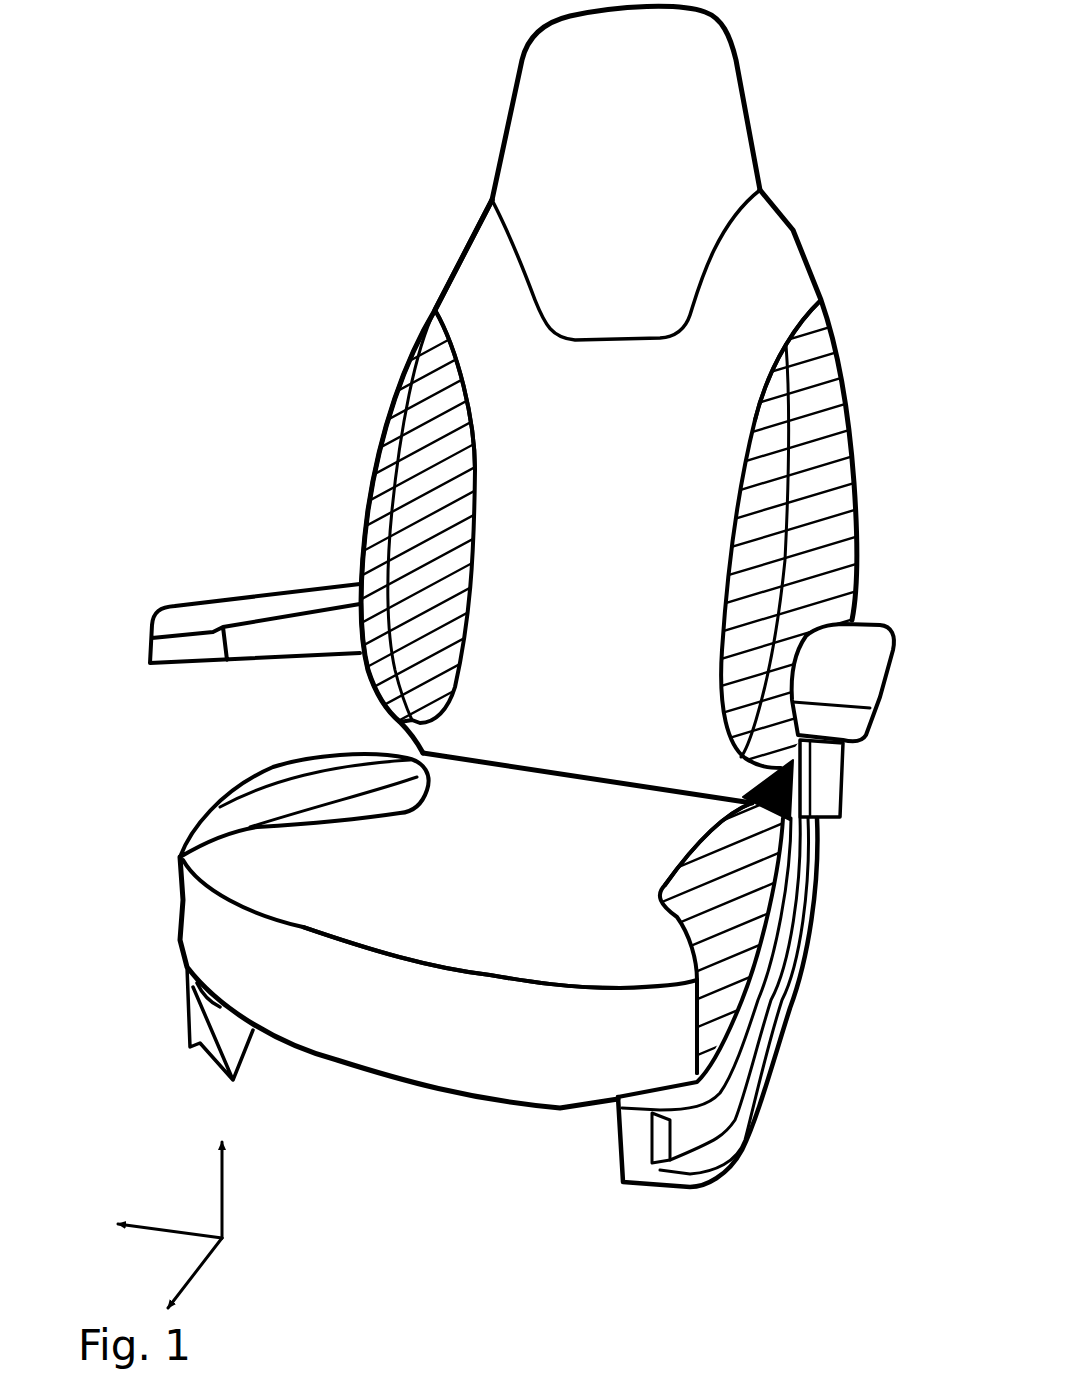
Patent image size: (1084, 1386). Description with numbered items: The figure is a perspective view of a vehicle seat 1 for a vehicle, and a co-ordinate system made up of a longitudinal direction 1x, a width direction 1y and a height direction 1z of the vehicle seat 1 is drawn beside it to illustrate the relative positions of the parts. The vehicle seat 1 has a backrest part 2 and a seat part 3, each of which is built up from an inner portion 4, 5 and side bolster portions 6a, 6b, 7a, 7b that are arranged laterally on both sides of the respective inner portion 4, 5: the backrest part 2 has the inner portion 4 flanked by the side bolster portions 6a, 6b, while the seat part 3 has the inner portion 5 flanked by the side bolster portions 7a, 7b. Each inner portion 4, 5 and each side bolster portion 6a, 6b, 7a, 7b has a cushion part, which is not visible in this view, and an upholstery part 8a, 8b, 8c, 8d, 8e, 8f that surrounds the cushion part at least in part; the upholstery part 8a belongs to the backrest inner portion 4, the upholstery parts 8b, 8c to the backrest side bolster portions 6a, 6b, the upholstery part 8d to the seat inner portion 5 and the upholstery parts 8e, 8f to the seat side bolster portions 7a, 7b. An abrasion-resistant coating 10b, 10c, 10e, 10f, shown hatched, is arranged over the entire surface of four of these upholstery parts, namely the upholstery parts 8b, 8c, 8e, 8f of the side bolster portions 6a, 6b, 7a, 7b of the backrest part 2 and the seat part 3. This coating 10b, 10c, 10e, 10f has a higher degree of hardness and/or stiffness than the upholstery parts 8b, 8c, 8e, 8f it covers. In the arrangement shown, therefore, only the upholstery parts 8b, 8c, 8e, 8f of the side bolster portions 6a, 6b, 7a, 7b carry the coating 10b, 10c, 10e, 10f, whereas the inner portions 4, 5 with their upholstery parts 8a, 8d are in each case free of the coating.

The vehicle seat 1 is at (345, 190).
The backrest part 2 is at (863, 307).
The seat part 3 is at (828, 1018).
The inner portion 4 is at (608, 581).
The inner portion 5 is at (467, 900).
The side bolster portion 6a is at (402, 512).
The side bolster portion 6b is at (773, 497).
The side bolster portion 7a is at (213, 803).
The side bolster portion 7b is at (810, 880).
The upholstery part 8a is at (470, 307).
The upholstery part 8b is at (427, 388).
The upholstery part 8c is at (813, 427).
The upholstery part 8d is at (473, 933).
The upholstery part 8e is at (268, 780).
The upholstery part 8f is at (800, 865).
The abrasion-resistant coating 10b is at (387, 447).
The abrasion-resistant coating 10c is at (773, 410).
The abrasion-resistant coating 10e is at (314, 767).
The abrasion-resistant coating 10f is at (805, 907).
The longitudinal direction 1x is at (203, 1270).
The width direction 1y is at (153, 1226).
The height direction 1z is at (223, 1190).